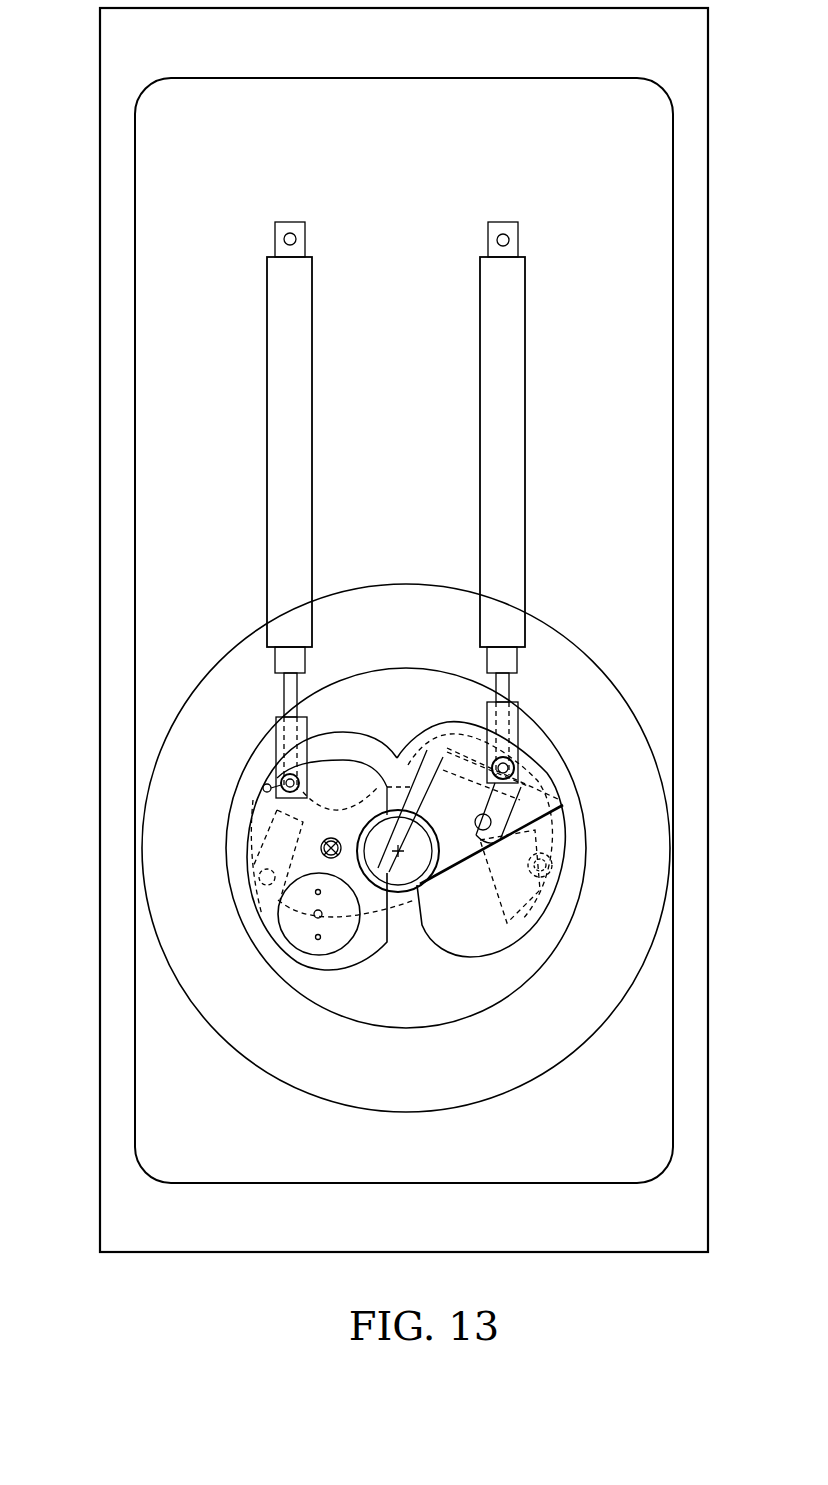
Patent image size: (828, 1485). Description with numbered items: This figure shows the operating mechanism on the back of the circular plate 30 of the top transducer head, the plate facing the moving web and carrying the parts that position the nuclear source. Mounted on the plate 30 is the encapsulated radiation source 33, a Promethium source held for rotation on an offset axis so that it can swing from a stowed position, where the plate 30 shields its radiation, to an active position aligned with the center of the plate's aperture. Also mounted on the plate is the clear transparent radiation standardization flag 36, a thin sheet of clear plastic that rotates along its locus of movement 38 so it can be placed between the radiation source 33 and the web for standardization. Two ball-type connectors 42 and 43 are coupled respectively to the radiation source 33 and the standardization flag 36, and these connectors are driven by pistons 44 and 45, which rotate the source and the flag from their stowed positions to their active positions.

The circular plate 30 is at (228, 653).
The encapsulated radiation source 33 is at (357, 937).
The radiation standardization flag 36 is at (528, 898).
The locus of movement 38 is at (420, 925).
The ball-type connector 42 is at (262, 784).
The ball-type connector 43 is at (537, 770).
The piston 44 is at (267, 478).
The piston 45 is at (480, 470).